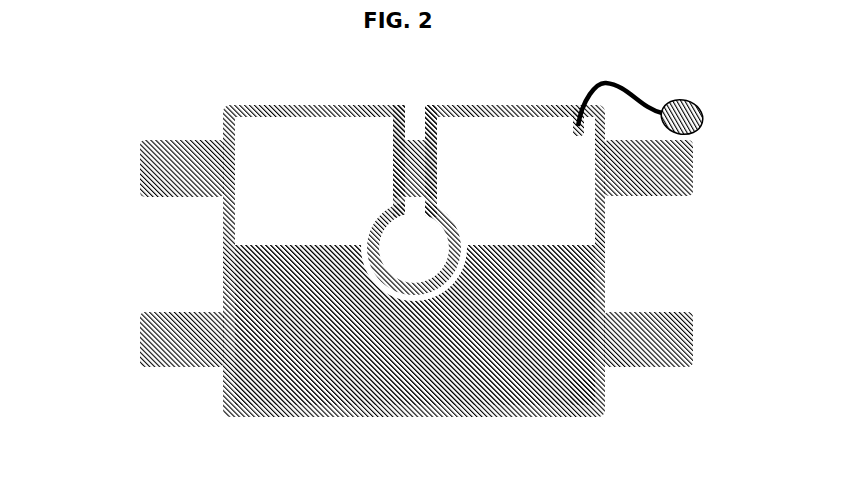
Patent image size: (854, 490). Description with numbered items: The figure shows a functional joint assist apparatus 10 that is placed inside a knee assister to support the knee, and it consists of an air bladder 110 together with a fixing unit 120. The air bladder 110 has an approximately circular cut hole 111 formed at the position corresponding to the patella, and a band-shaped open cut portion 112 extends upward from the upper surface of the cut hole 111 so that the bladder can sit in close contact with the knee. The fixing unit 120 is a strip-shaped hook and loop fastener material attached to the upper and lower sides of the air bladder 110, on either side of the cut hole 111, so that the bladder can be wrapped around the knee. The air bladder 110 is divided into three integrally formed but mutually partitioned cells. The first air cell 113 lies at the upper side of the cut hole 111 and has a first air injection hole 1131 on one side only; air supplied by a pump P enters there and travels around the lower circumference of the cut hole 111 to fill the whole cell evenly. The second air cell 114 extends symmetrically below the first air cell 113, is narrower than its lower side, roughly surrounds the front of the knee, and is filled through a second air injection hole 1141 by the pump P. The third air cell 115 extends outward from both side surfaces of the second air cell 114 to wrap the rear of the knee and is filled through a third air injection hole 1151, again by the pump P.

The functional joint assist apparatus 10 is at (125, 90).
The air bladder 110 is at (221, 248).
The fixing unit 120 is at (167, 375).
The cut hole 111 is at (380, 213).
The open cut portion 112 is at (403, 128).
The first air cell 113 is at (264, 160).
The first air injection hole 1131 is at (574, 130).
The second air cell 114 is at (360, 360).
The second air injection hole 1141 is at (502, 374).
The third air cell 115 is at (263, 355).
The third air injection hole 1151 is at (583, 385).
The pump P is at (643, 96).